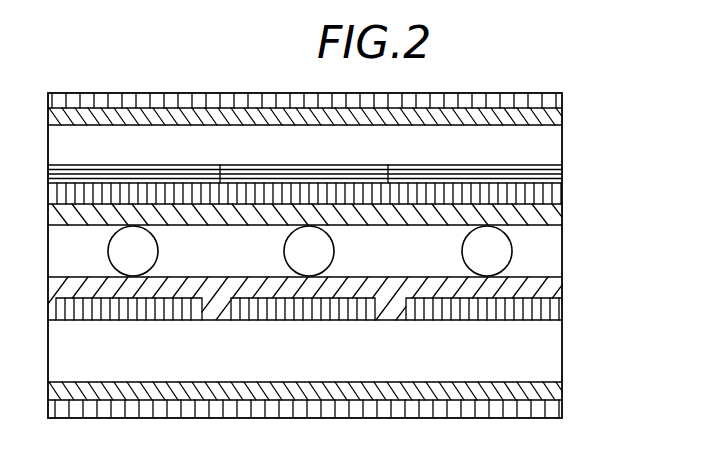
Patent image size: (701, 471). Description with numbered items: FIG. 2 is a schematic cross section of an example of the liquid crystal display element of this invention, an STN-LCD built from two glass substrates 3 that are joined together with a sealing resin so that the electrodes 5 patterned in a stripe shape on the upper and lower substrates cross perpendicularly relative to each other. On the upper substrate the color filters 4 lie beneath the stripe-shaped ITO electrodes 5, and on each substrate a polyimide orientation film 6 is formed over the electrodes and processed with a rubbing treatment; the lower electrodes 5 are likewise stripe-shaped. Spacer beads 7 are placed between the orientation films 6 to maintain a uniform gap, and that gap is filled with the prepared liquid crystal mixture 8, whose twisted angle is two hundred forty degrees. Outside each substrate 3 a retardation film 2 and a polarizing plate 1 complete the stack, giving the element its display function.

The polarizing plate 1 is at (562, 100).
The retardation film 2 is at (562, 122).
The substrate 3 is at (553, 148).
The color filter 4 is at (562, 172).
The electrode 5 is at (562, 195).
The alignment film 6 is at (562, 218).
The spacer 7 is at (497, 248).
The liquid crystal layer 8 is at (553, 263).